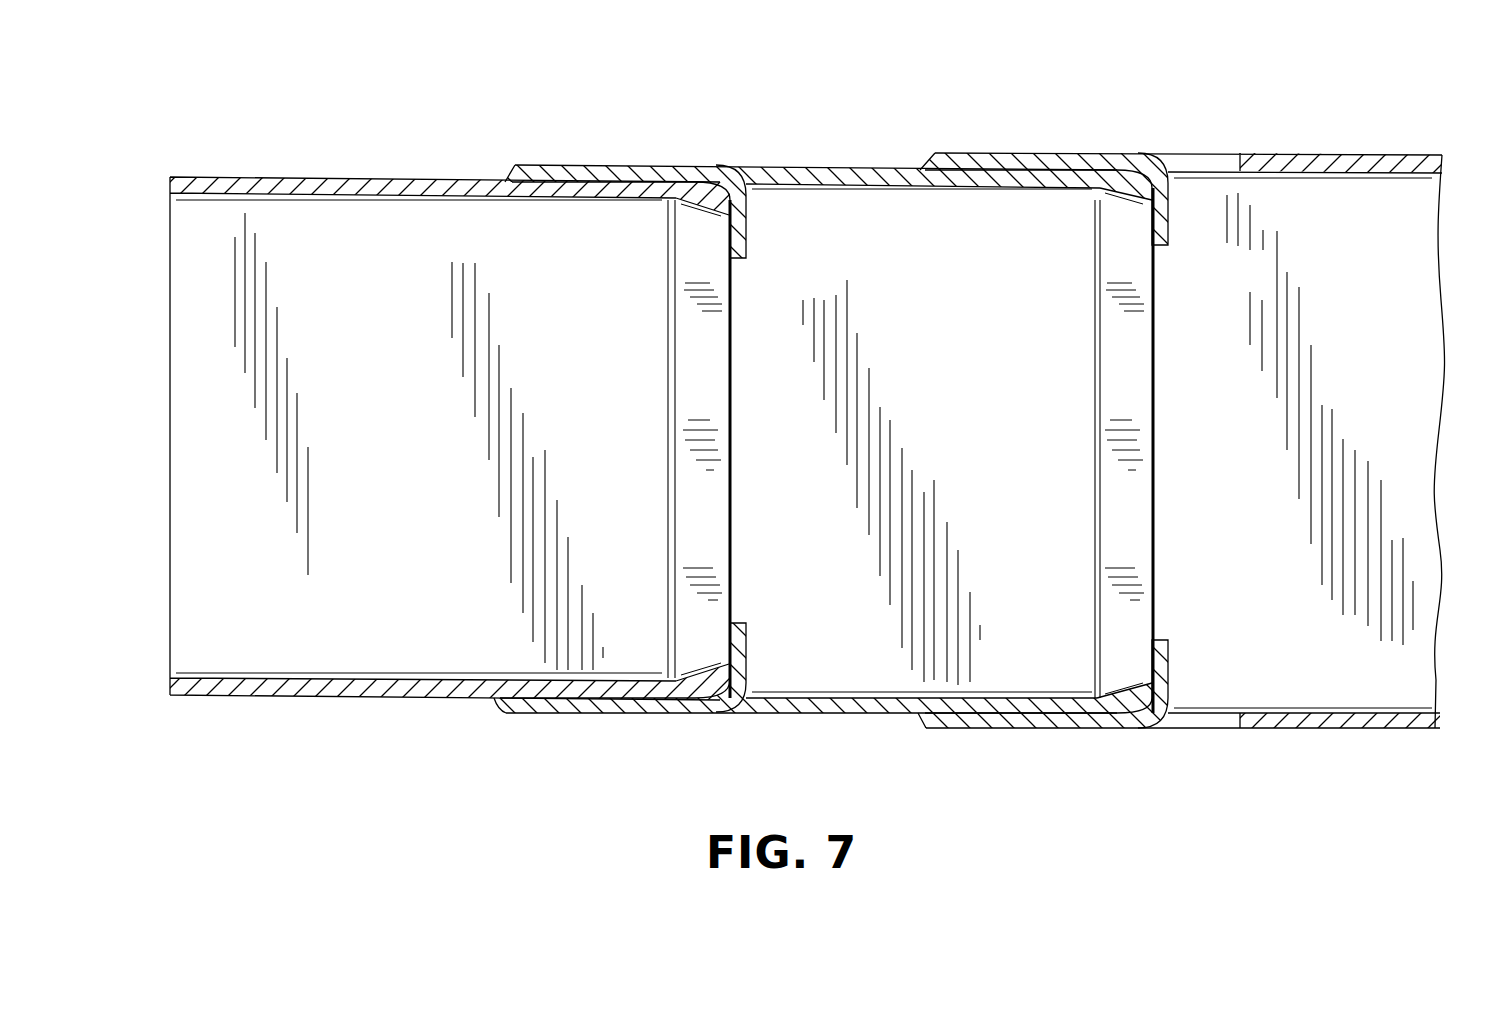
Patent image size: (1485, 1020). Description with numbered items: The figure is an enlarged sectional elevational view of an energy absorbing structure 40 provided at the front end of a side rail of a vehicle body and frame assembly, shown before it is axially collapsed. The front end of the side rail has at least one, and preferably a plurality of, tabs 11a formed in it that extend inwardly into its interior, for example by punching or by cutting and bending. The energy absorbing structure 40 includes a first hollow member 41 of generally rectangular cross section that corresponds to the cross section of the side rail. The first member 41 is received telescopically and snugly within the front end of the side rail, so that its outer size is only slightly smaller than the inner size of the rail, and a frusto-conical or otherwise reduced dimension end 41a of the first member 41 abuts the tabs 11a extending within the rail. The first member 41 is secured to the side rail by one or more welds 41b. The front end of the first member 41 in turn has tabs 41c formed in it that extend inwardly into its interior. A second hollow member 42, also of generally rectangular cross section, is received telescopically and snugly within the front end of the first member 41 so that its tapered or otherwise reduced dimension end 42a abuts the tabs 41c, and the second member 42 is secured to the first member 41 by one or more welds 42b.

The energy absorbing structure 40 is at (1163, 112).
The first hollow member 41 is at (838, 172).
The reduced dimension end of the first member 41a is at (1132, 190).
The welds 41b is at (936, 158).
The tabs 41c is at (745, 235).
The second hollow member 42 is at (334, 183).
The reduced dimension end of the second member 42a is at (706, 203).
The welds 42b is at (508, 167).
The tabs 11a is at (1170, 218).